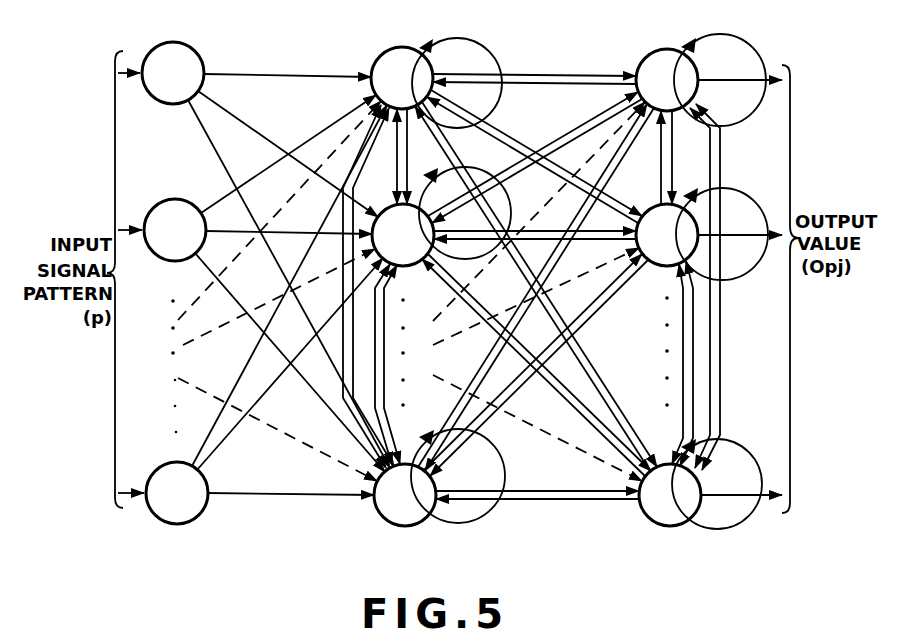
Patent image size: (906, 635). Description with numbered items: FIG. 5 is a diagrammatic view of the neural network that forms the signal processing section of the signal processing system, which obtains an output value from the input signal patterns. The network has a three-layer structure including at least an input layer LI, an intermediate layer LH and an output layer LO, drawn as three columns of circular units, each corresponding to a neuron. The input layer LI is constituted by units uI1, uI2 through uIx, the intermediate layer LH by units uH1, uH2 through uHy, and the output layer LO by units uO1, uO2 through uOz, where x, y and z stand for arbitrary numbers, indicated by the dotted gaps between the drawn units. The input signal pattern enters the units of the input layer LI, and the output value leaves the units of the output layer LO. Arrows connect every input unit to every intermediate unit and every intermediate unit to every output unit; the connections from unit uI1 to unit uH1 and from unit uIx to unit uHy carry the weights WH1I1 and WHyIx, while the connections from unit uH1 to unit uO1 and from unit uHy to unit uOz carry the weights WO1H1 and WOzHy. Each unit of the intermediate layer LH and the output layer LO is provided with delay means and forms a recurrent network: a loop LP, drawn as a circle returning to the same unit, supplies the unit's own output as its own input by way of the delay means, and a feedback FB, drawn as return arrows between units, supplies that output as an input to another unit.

The input layer LI is at (220, 528).
The intermediate layer LH is at (455, 528).
The output layer LO is at (712, 530).
The loop LP is at (483, 168).
The feedback FB is at (603, 395).
The unit uI1 is at (173, 73).
The unit uI2 is at (175, 230).
The unit uIx is at (177, 493).
The unit uH1 is at (402, 78).
The unit uH2 is at (403, 235).
The unit uHy is at (405, 495).
The unit uO1 is at (667, 80).
The unit uO2 is at (667, 235).
The unit uOz is at (670, 495).
The weight from input 1 to hidden 1 WH1I1 is at (287, 66).
The weight from input x to hidden y WHyIx is at (291, 481).
The weight from hidden 1 to output 1 WO1H1 is at (534, 66).
The weight from hidden y to output z WOzHy is at (537, 478).